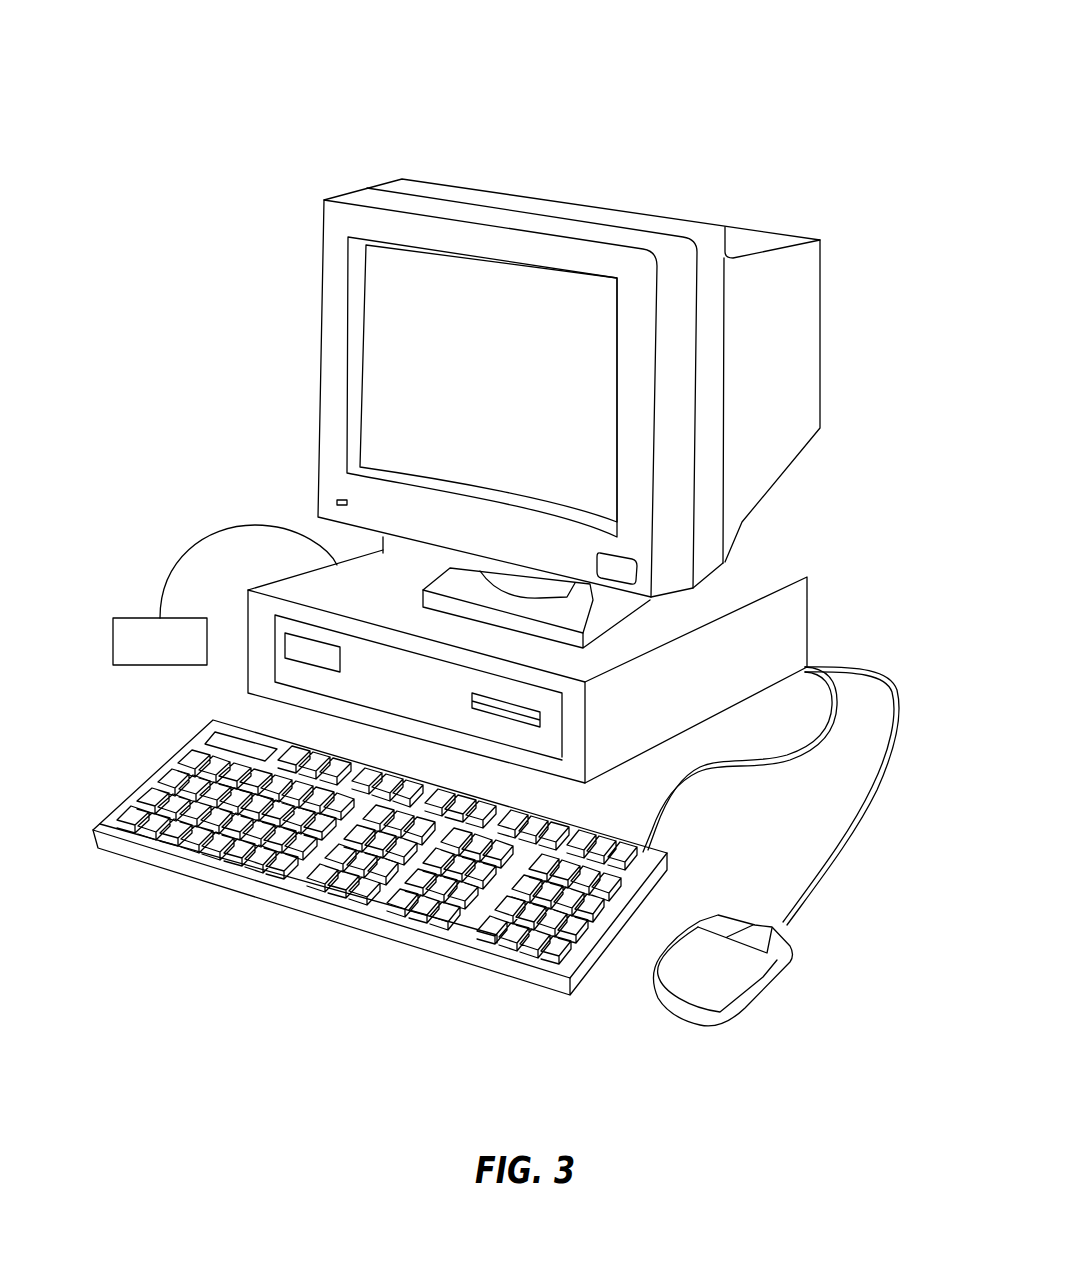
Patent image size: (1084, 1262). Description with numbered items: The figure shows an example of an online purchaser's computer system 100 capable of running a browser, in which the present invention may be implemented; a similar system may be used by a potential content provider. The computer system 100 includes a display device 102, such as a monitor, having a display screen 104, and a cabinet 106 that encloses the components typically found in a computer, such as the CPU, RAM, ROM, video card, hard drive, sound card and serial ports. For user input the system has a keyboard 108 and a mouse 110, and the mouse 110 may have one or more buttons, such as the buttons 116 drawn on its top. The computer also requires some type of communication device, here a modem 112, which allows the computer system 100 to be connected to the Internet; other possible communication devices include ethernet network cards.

The computer system 100 is at (784, 71).
The display device 102 is at (822, 340).
The display screen 104 is at (467, 296).
The cabinet 106 is at (807, 577).
The keyboard 108 is at (302, 913).
The mouse 110 is at (735, 961).
The modem 112 is at (160, 663).
The buttons 116 is at (727, 927).